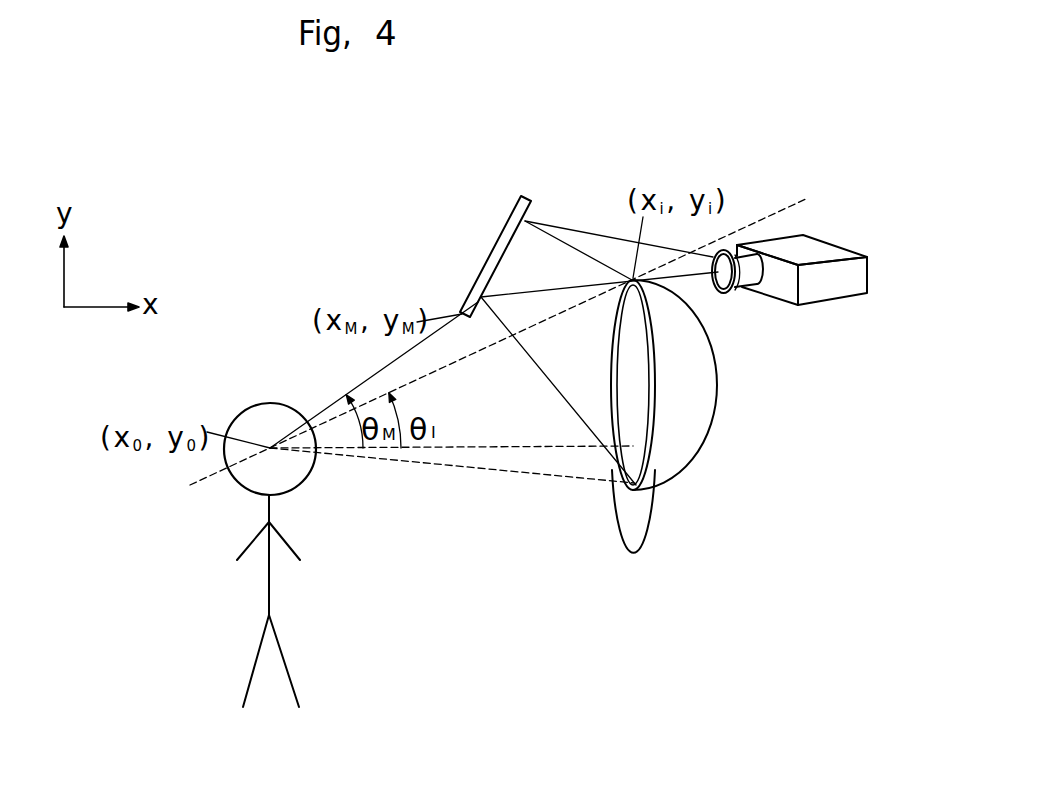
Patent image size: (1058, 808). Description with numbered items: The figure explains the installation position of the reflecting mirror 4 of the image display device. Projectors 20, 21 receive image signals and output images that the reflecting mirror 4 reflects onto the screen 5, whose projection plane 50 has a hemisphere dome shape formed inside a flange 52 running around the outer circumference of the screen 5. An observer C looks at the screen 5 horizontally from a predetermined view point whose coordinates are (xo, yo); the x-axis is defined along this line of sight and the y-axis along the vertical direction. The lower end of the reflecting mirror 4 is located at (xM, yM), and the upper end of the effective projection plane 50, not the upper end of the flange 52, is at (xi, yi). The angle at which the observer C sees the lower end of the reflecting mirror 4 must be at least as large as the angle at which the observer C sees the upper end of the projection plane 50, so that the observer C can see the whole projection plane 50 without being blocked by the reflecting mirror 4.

The reflecting mirror 4 is at (532, 204).
The screen 5 is at (663, 421).
The projection plane 50 is at (631, 358).
The flange 52 is at (635, 489).
The projector 20 is at (816, 306).
The projector 21 is at (737, 271).
The observer C is at (235, 417).